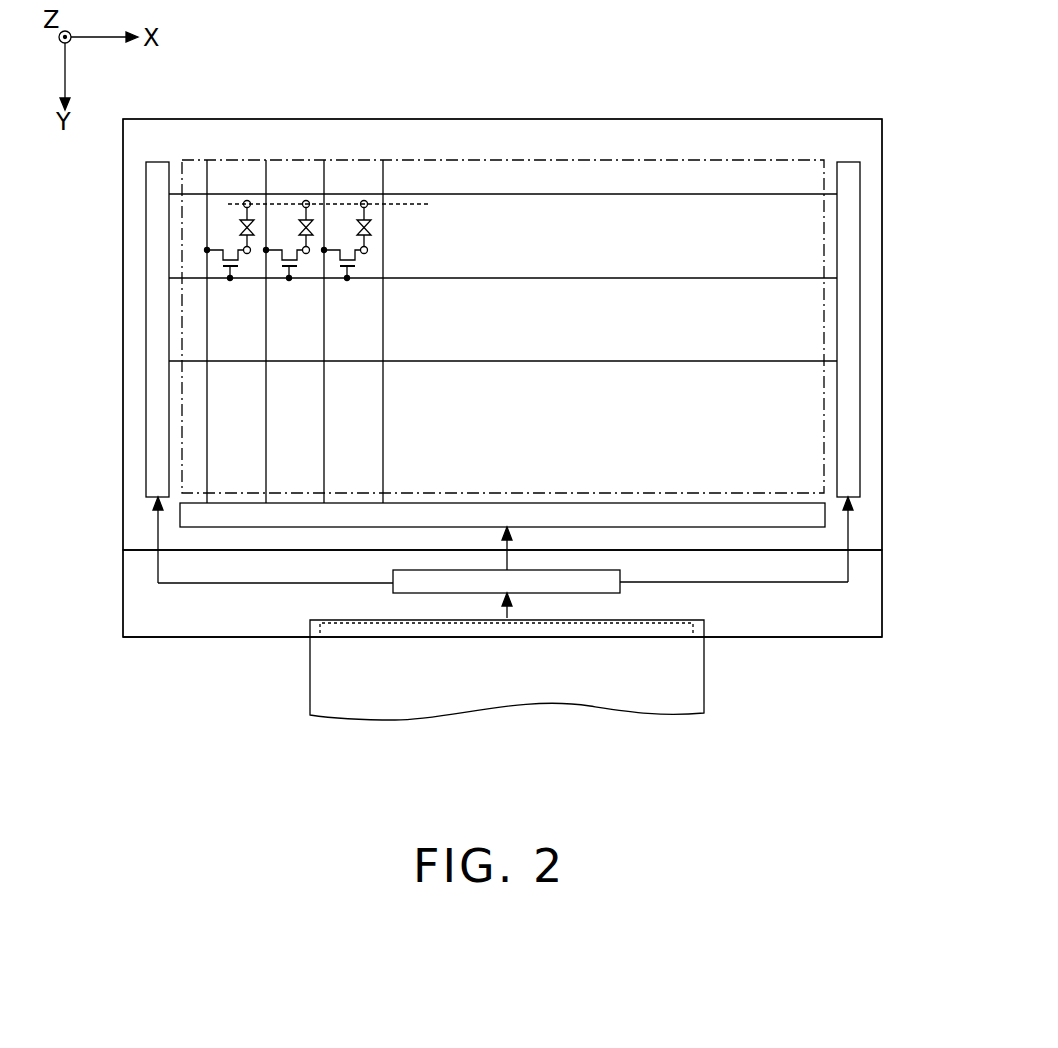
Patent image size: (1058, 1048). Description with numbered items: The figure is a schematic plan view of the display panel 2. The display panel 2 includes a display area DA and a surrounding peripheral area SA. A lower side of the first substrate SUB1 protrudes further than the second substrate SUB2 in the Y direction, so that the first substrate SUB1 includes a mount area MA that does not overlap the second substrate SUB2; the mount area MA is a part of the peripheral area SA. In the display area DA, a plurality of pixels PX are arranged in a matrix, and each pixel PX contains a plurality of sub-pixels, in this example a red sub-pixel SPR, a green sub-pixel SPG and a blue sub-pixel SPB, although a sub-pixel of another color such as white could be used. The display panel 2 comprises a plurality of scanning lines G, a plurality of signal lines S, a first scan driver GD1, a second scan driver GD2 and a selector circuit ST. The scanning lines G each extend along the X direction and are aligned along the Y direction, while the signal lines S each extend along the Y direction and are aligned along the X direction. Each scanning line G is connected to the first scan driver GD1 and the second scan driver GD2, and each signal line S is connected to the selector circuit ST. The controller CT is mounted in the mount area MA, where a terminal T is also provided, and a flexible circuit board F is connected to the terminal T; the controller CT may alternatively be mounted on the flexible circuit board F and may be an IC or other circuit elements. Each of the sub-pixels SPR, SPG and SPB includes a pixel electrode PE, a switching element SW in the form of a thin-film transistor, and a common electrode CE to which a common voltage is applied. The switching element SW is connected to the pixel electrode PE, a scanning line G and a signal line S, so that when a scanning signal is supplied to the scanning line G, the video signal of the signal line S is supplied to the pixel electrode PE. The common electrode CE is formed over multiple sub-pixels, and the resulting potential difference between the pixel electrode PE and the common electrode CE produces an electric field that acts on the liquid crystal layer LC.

The display panel 2 is at (760, 97).
The pixel PX is at (382, 62).
The red sub-pixel SPR is at (230, 184).
The green sub-pixel SPG is at (289, 184).
The blue sub-pixel SPB is at (349, 184).
The display area DA is at (565, 160).
The peripheral area SA is at (633, 133).
The common electrode CE is at (366, 200).
The liquid crystal layer LC is at (369, 228).
The pixel electrode PE is at (368, 253).
The switching element SW is at (358, 262).
The scanning line G is at (681, 195).
The first scan driver GD1 is at (146, 390).
The second scan driver GD2 is at (860, 378).
The signal line S is at (207, 482).
The selector circuit ST is at (575, 503).
The first substrate SUB1 is at (183, 638).
The second substrate SUB2 is at (140, 552).
The terminal T is at (683, 618).
The controller CT is at (590, 594).
The mount area MA is at (818, 622).
The flexible circuit board F is at (612, 709).